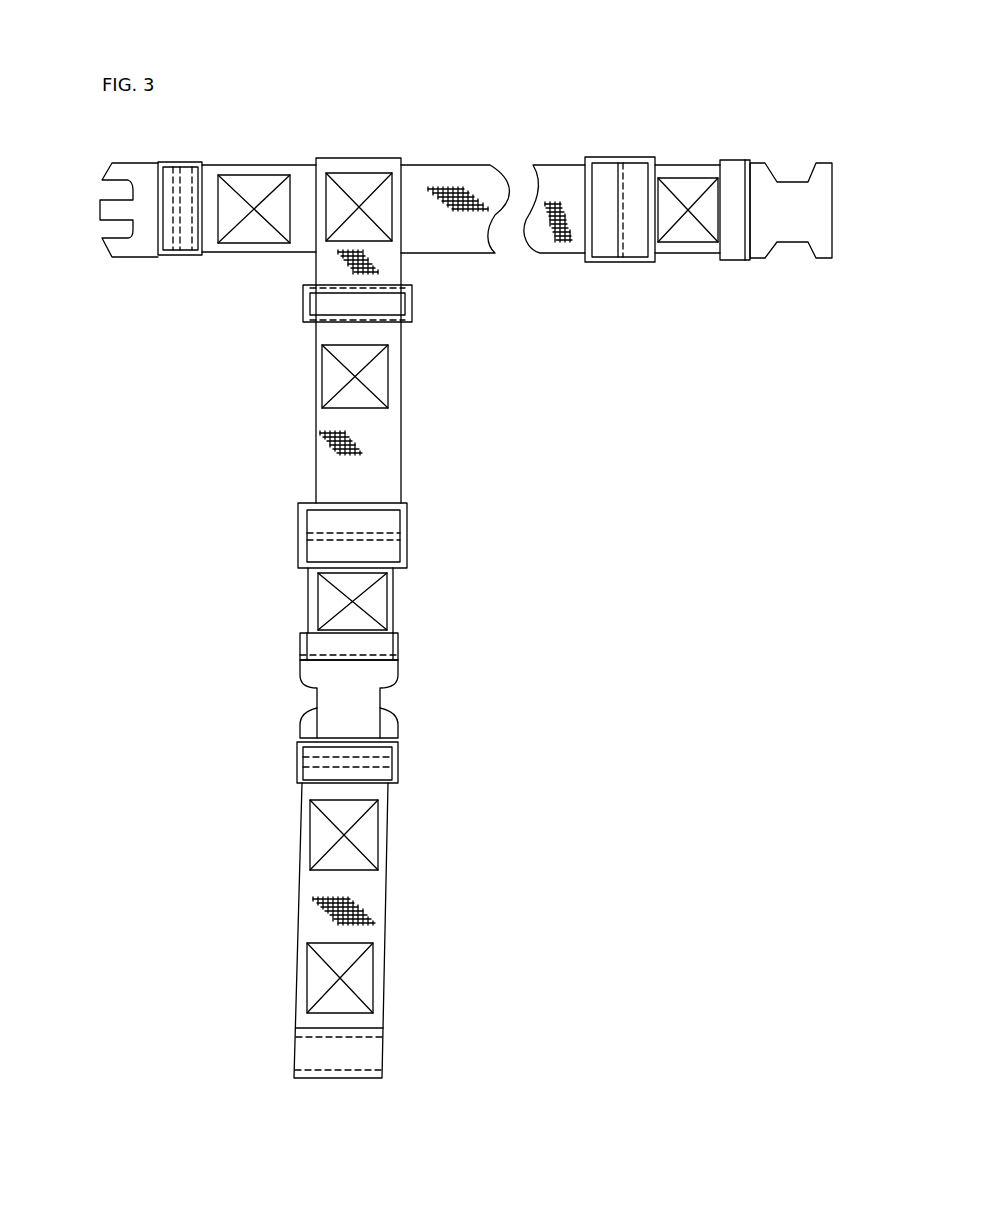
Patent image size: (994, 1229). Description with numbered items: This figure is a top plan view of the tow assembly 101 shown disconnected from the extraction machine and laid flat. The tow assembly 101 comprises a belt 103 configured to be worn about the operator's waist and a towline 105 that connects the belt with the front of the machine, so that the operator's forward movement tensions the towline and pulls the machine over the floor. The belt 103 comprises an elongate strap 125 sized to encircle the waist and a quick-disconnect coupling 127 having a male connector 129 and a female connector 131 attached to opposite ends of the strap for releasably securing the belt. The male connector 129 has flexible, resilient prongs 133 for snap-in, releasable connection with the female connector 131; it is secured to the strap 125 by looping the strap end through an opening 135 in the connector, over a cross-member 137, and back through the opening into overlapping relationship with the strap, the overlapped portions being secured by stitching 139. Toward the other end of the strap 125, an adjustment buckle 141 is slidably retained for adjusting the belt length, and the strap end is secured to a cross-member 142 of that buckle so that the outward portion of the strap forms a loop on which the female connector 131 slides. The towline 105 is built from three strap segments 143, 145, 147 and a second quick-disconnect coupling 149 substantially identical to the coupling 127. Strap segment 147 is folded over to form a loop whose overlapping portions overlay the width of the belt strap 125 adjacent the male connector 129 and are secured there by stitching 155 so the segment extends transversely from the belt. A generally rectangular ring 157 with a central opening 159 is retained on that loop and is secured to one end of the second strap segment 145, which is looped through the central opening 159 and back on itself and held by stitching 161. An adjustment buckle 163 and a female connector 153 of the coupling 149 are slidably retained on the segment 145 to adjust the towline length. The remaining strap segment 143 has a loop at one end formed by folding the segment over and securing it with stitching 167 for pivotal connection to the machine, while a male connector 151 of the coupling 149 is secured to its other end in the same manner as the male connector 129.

The tow assembly 101 is at (522, 108).
The belt 103 is at (427, 164).
The towline 105 is at (400, 458).
The strap 125 is at (477, 255).
The quick-disconnect coupling 127 is at (88, 238).
The male connector 129 is at (158, 162).
The female connector 131 is at (770, 163).
The prongs 133 is at (118, 163).
The opening 135 is at (168, 258).
The cross-member 137 is at (205, 188).
The stitching 139 is at (262, 247).
The adjustment buckle 141 is at (600, 157).
The cross-member 142 is at (633, 237).
The strap segment 143 is at (388, 888).
The strap segment 145 is at (310, 467).
The strap segment 147 is at (404, 273).
The quick-disconnect coupling 149 is at (428, 693).
The male connector 151 is at (398, 713).
The female connector 153 is at (305, 677).
The stitching 155 is at (340, 172).
The rectangular ring 157 is at (303, 310).
The central opening 159 is at (312, 298).
The stitching 161 is at (402, 382).
The adjustment buckle 163 is at (407, 555).
The stitching 167 is at (377, 977).